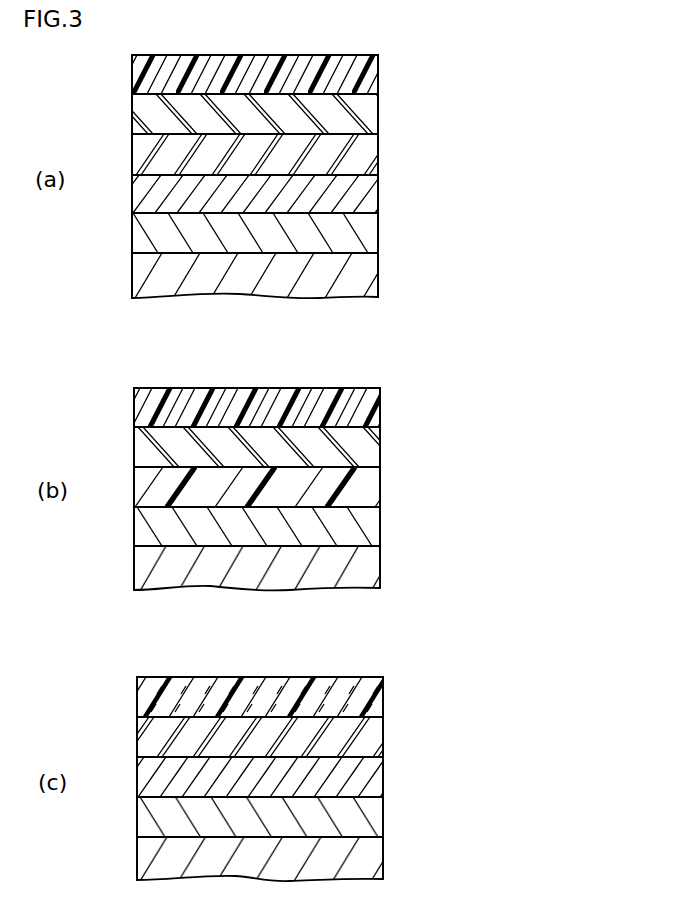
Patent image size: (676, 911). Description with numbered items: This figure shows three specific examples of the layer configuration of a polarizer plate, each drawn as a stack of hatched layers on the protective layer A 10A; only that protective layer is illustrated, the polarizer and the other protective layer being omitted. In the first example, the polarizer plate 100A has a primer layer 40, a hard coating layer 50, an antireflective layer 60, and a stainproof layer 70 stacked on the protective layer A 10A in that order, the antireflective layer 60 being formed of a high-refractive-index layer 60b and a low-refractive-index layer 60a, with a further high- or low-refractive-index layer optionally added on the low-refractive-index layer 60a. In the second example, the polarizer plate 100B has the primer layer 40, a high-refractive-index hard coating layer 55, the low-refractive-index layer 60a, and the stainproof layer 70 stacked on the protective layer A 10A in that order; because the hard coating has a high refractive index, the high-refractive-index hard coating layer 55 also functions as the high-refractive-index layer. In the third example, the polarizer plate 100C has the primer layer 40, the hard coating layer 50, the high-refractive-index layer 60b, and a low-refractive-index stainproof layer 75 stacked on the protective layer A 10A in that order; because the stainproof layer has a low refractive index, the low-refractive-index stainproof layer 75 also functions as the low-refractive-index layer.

The protective layer A 10A is at (370, 276).
The primer layer 40 is at (370, 234).
The hard coating layer 50 is at (370, 195).
The high-refractive-index hard coating layer 55 is at (372, 487).
The antireflective layer 60 is at (459, 93).
The low-refractive-index layer 60a is at (370, 115).
The high-refractive-index layer 60b is at (370, 154).
The stainproof layer 70 is at (370, 76).
The low-refractive-index stainproof layer 75 is at (375, 697).
The polarizer plate 100A is at (558, 103).
The polarizer plate 100B is at (497, 386).
The polarizer plate 100C is at (500, 674).